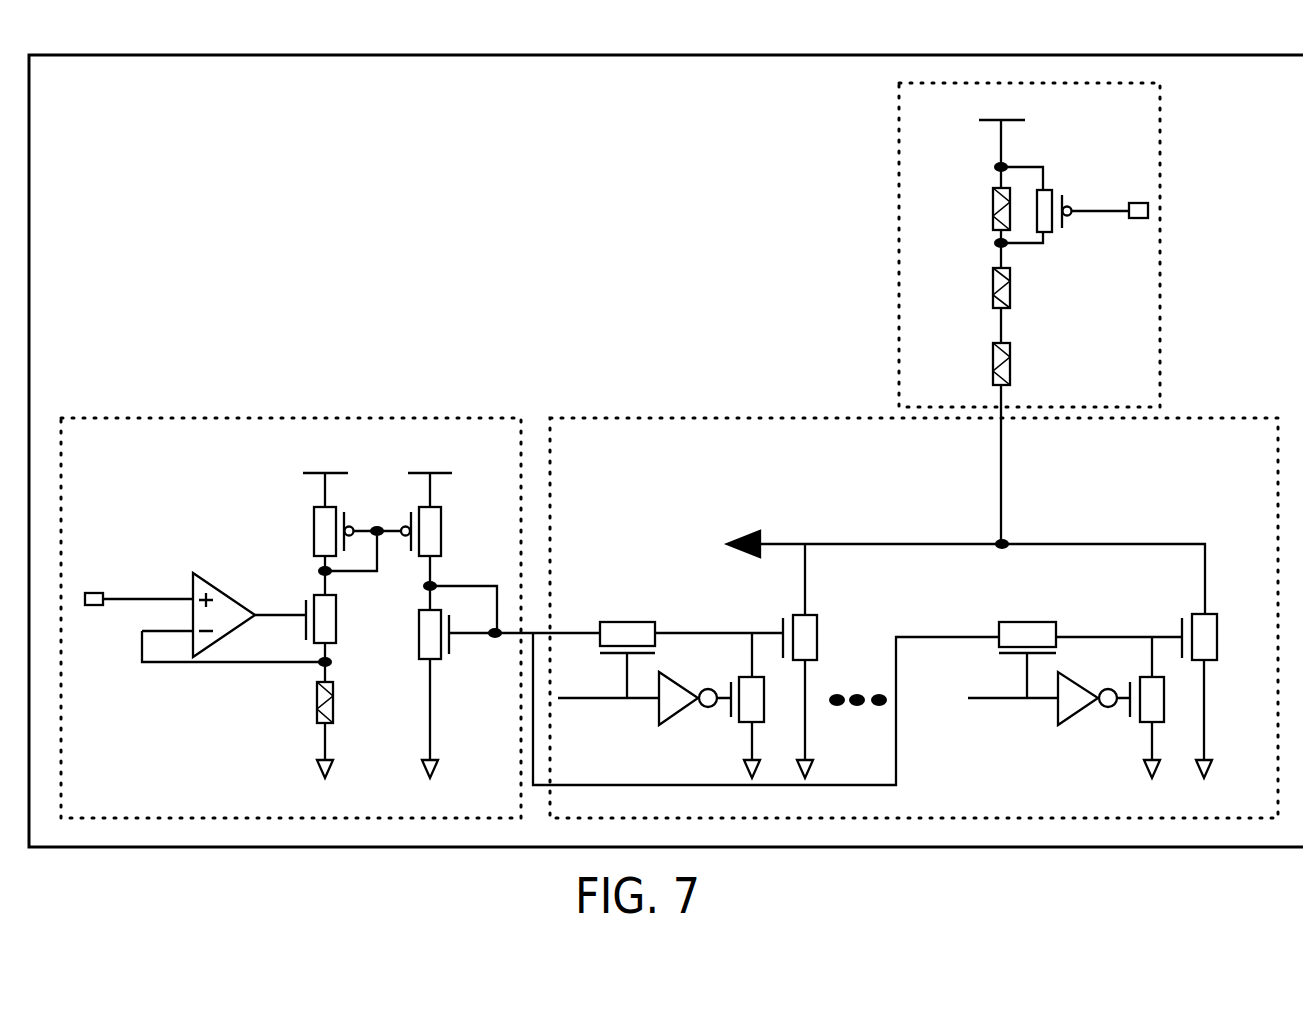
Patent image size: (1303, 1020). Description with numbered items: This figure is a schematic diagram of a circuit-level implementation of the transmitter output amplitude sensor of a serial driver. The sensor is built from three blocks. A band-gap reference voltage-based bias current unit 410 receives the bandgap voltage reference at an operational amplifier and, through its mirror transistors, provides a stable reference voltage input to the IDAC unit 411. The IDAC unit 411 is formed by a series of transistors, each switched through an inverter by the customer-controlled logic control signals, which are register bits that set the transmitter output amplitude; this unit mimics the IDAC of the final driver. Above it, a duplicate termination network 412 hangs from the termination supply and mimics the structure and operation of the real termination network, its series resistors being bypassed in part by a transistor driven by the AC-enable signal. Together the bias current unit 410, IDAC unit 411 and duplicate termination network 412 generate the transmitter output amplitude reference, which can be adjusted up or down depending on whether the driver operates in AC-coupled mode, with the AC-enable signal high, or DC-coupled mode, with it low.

The band-gap reference voltage-based bias current unit 410 is at (300, 418).
The IDAC unit 411 is at (789, 418).
The duplicate termination network 412 is at (899, 199).